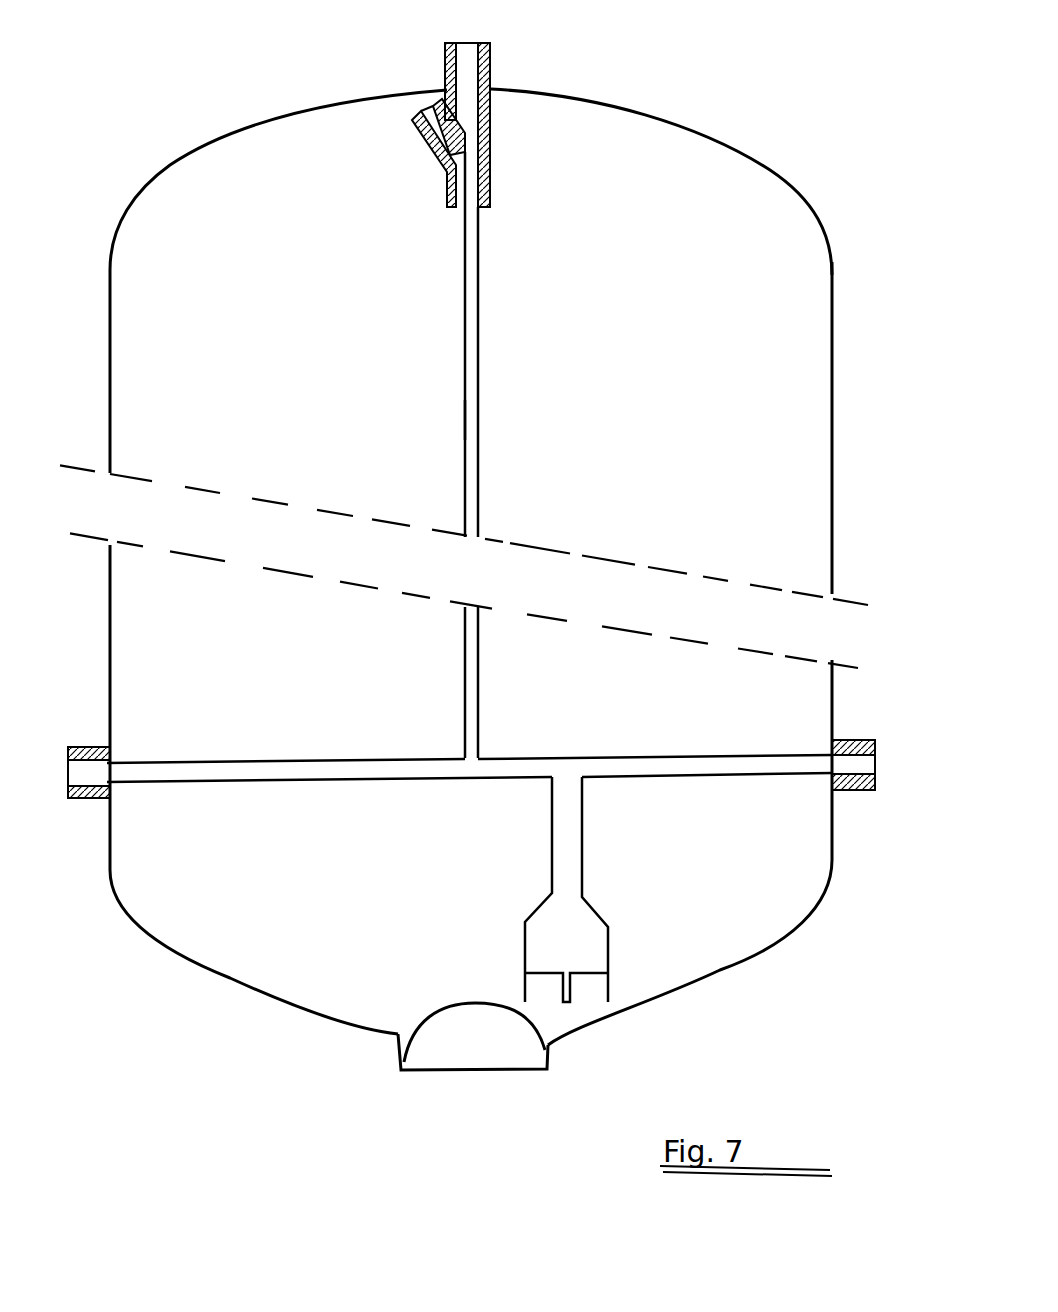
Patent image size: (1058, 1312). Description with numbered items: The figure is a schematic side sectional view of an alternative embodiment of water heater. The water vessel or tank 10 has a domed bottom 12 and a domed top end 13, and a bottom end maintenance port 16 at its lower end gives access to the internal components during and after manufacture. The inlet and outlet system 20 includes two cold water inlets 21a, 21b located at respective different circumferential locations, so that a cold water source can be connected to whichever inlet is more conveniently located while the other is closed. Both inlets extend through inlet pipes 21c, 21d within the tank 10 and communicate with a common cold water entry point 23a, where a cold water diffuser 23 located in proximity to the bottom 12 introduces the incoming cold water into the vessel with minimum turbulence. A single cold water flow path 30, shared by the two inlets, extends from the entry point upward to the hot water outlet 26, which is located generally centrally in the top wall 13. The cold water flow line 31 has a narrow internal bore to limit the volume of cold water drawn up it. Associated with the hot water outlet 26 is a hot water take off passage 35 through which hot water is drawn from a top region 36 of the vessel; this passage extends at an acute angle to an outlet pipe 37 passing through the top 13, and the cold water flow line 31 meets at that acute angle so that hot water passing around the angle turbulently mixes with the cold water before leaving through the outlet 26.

The water vessel or tank 10 is at (459, 576).
The domed bottom 12 is at (665, 1010).
The domed top end 13 is at (240, 132).
The bottom end maintenance port 16 is at (398, 1022).
The inlet and outlet system 20 is at (492, 725).
The cold water inlet 21a is at (90, 770).
The cold water inlet 21b is at (852, 765).
The inlet pipe 21c is at (213, 775).
The inlet pipe 21d is at (657, 765).
The cold water diffuser 23 is at (635, 889).
The cold water entry point 23a is at (598, 988).
The hot water outlet 26 is at (511, 125).
The cold water flow path 30 is at (458, 421).
The tempering tube or cold water flow line 31 is at (470, 350).
The hot water take off passage 35 is at (440, 140).
The top region 36 is at (405, 104).
The outlet pipe 37 is at (486, 145).